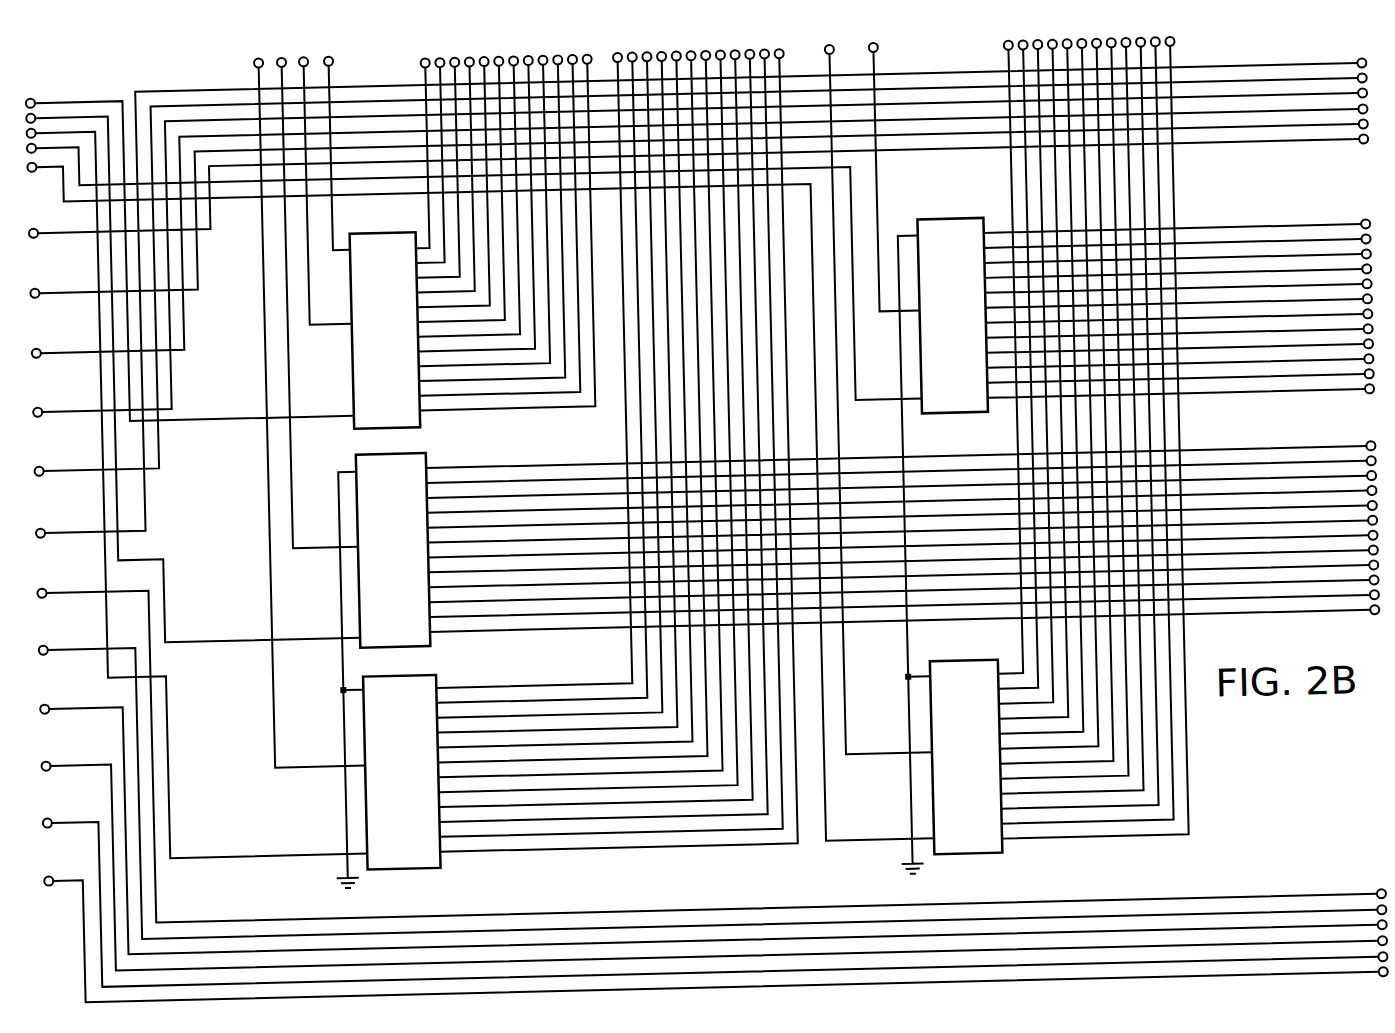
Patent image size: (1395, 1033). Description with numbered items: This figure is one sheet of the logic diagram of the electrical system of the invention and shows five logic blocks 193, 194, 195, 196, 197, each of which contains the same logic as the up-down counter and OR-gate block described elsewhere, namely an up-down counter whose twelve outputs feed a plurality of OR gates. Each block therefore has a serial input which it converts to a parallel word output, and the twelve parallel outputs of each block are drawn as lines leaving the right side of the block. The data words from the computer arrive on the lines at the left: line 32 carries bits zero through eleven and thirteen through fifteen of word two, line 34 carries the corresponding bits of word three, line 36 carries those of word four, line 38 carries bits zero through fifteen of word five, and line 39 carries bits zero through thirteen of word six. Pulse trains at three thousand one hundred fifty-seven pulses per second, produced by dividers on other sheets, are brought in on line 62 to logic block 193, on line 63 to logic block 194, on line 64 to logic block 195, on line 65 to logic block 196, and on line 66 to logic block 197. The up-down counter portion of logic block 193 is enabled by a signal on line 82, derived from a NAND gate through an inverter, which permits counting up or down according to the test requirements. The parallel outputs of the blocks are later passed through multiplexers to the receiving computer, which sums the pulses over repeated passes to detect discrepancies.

The line 32 is at (322, 440).
The line 34 is at (310, 644).
The line 36 is at (305, 861).
The line 38 is at (884, 423).
The line 39 is at (860, 860).
The line 62 is at (322, 557).
The line 63 is at (305, 772).
The line 64 is at (333, 350).
The line 65 is at (886, 348).
The line 66 is at (872, 770).
The line 82 is at (341, 276).
The logic block 193 is at (384, 252).
The logic block 194 is at (393, 472).
The logic block 195 is at (396, 694).
The logic block 196 is at (952, 252).
The logic block 197 is at (953, 694).